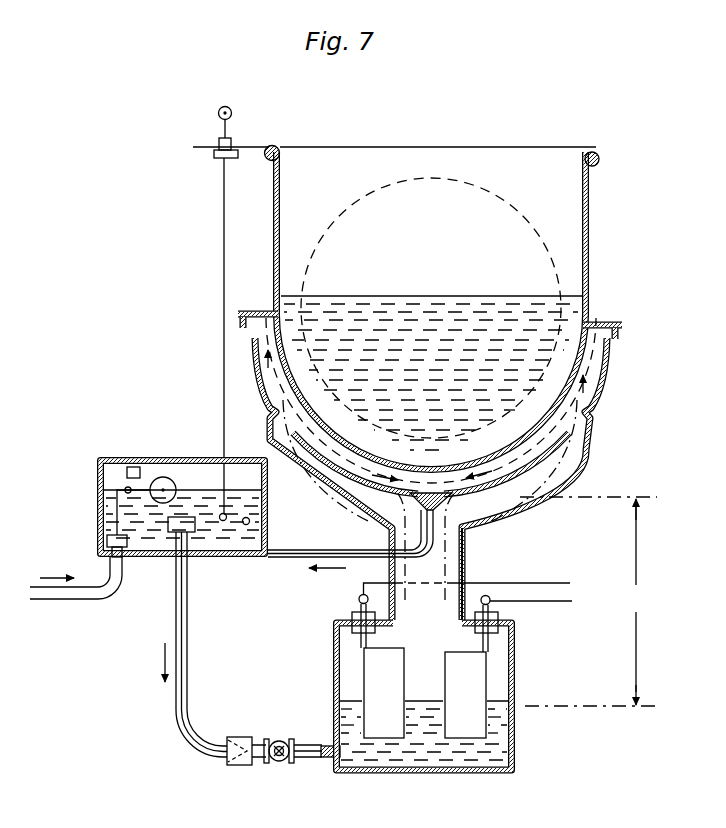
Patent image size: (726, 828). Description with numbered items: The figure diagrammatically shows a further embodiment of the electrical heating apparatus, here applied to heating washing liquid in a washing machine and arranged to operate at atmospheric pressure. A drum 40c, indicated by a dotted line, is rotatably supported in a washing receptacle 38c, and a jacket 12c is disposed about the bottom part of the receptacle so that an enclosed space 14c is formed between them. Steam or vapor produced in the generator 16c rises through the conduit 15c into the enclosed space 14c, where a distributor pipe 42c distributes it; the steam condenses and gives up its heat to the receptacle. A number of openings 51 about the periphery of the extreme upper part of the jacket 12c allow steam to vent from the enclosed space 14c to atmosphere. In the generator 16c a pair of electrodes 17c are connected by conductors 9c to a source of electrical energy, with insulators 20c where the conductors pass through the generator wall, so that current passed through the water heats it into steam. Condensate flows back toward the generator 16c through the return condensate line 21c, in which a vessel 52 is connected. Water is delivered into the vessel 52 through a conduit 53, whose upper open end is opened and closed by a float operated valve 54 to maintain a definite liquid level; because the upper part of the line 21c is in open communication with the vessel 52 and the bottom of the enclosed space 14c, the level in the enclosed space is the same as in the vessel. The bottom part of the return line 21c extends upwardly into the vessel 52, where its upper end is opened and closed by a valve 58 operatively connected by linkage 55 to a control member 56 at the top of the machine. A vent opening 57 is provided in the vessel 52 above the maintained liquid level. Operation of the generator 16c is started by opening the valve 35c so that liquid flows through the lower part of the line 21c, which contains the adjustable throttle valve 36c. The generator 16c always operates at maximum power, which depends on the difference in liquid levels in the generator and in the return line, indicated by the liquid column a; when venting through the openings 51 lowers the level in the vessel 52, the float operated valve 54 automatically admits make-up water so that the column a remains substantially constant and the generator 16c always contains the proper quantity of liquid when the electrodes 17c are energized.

The washing receptacle 38c is at (592, 218).
The drum 40c is at (507, 202).
The control member 56 is at (232, 112).
The linkage 55 is at (221, 291).
The openings 51 is at (240, 322).
The enclosed space 14c is at (262, 342).
The jacket 12c is at (604, 357).
The distributor pipe 42c is at (541, 480).
The return condensate line 21c is at (296, 788).
The conduit 15c is at (470, 553).
The vessel 52 is at (170, 457).
The vent opening 57 is at (126, 471).
The float operated valve 54 is at (106, 540).
The conduit 53 is at (99, 599).
The valve 58 is at (190, 531).
The throttle valve 36c is at (241, 768).
The valve 35c is at (288, 739).
The generator 16c is at (428, 776).
The electrodes 17c is at (453, 651).
The insulators 20c is at (538, 619).
The conductors 9c is at (543, 599).
The liquid column a is at (643, 604).